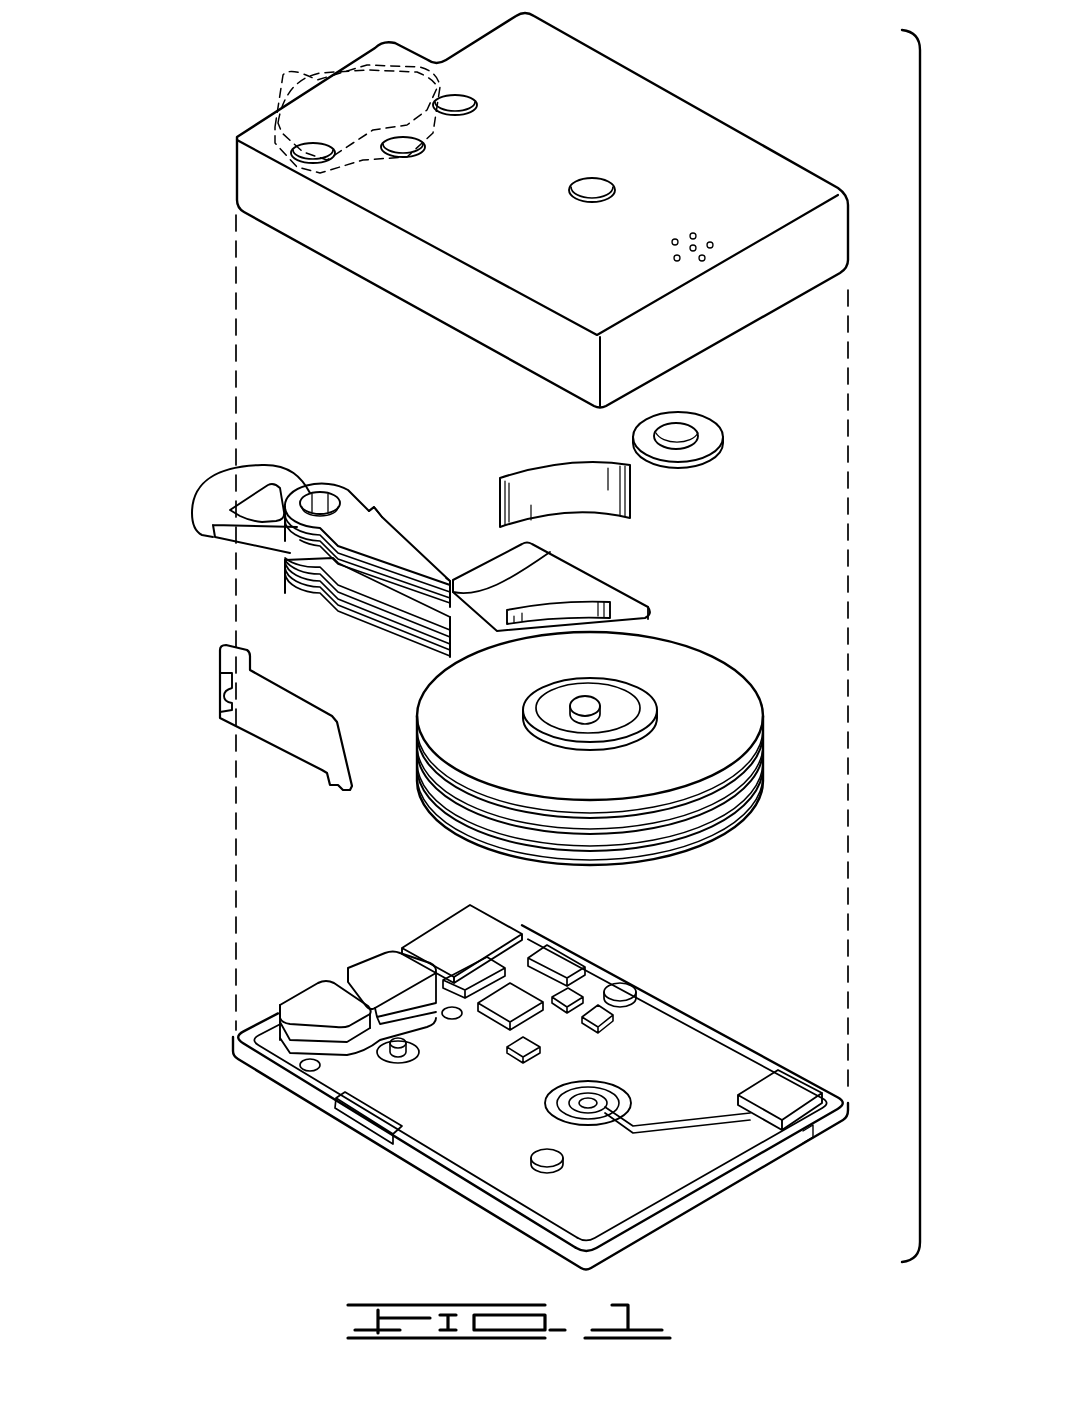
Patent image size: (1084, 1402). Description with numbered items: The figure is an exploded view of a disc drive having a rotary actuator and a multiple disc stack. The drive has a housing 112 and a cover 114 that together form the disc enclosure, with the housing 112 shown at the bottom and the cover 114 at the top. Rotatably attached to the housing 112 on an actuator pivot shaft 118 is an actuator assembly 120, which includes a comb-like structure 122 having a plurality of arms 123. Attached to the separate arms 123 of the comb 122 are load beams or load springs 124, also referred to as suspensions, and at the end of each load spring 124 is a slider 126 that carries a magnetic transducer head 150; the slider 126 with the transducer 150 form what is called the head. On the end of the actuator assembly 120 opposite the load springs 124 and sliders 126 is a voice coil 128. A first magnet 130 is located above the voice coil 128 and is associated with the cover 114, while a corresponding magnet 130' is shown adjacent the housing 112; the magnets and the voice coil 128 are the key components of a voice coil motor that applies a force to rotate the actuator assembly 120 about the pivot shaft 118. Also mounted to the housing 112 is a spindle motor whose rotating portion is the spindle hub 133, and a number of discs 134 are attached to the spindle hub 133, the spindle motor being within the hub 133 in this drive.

The housing 112 is at (700, 1060).
The cover 114 is at (678, 152).
The actuator pivot shaft 118 is at (320, 503).
The actuator assembly 120 is at (257, 553).
The comb-like structure 122 is at (340, 613).
The arms 123 is at (378, 514).
The load springs 124 is at (390, 543).
The slider 126 is at (452, 583).
The voice coil 128 is at (213, 498).
The first magnet 130 is at (346, 92).
The base raised portions 130' is at (339, 987).
The spindle hub 133 is at (592, 708).
The discs 134 is at (718, 702).
The magnetic transducer head 150 is at (550, 552).